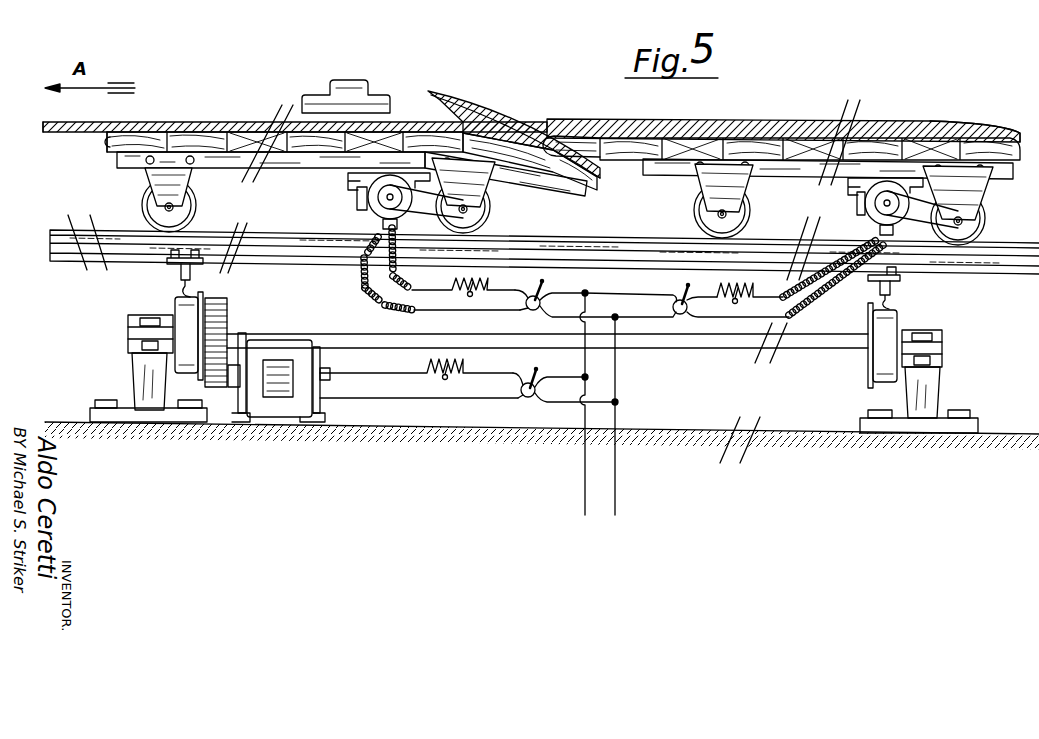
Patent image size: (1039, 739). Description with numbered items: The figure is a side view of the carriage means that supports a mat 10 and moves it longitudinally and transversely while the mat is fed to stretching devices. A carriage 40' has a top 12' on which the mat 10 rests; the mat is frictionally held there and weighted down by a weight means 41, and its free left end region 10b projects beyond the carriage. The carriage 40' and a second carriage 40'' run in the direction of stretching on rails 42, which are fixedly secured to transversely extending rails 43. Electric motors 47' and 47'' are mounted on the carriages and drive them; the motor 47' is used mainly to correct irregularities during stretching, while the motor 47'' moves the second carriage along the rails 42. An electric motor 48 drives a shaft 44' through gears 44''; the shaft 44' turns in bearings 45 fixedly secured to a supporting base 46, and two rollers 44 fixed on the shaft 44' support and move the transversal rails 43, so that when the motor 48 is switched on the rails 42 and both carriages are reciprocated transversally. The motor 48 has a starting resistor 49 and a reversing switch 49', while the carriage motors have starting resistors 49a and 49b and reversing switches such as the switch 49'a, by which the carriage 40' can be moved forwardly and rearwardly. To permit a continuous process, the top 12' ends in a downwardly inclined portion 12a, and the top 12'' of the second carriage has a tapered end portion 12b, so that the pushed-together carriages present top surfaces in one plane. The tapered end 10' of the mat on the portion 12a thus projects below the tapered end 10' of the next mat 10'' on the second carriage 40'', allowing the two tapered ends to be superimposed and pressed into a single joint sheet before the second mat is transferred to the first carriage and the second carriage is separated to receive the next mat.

The mat 10 is at (295, 97).
The deck end 10b is at (50, 134).
The tapered end of mat 10' is at (724, 119).
The second mat 10'' is at (783, 115).
The top of carriage 12' is at (271, 176).
The top of second carriage 12'' is at (828, 184).
The downwardly inclined portion 12a is at (549, 182).
The tapered end portion 12b is at (600, 152).
The carriage 40' is at (318, 195).
The second carriage 40'' is at (823, 204).
The weight means 41 is at (369, 107).
The rails 42 is at (560, 252).
The transversely extending rails 43 is at (200, 277).
The rollers 44 is at (541, 337).
The shaft 44' is at (547, 353).
The gears 44'' is at (241, 342).
The bearings 45 is at (142, 373).
The supporting base 46 is at (800, 437).
The electric motor 47' is at (387, 243).
The electric motor 47'' is at (868, 248).
The electric motor 48 is at (323, 412).
The starting resistor 49 is at (419, 377).
The reversing switch 49' is at (564, 397).
The starting resistor 49a is at (490, 284).
The reversing switch 49'a is at (652, 295).
The starting resistor 49b is at (731, 302).